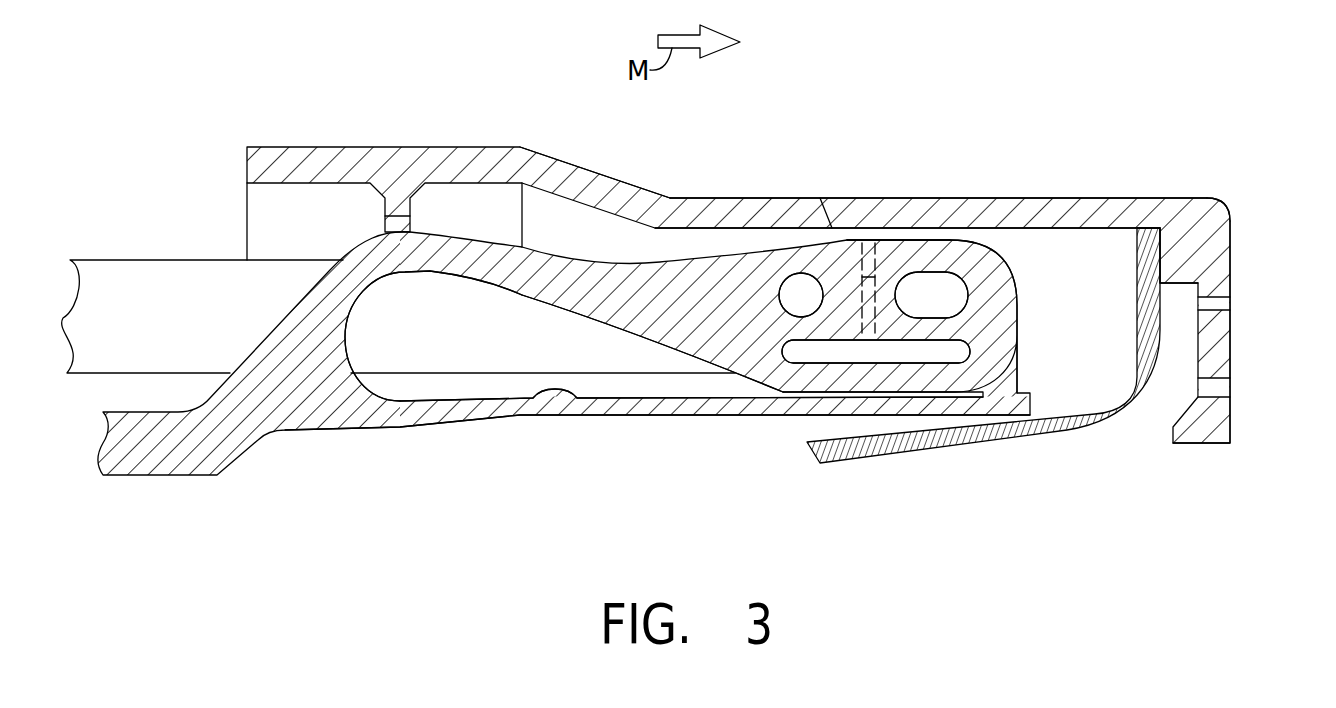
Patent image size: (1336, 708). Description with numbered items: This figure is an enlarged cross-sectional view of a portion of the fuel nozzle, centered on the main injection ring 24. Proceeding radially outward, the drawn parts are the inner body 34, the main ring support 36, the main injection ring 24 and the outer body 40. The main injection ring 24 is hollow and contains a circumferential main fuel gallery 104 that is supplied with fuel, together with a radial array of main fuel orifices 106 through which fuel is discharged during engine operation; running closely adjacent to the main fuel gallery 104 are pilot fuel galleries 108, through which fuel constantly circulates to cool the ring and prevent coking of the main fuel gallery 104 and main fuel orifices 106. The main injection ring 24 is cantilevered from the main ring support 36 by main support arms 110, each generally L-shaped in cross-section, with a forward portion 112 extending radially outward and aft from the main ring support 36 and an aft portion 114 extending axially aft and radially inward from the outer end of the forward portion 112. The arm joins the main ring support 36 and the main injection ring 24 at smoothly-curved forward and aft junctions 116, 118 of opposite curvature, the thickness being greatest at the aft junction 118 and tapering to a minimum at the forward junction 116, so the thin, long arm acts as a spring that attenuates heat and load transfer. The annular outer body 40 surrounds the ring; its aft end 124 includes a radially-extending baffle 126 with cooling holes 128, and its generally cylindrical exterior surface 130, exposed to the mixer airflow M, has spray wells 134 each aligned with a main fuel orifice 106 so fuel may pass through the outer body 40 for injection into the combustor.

The main injection ring 24 is at (985, 280).
The inner body 34 is at (967, 438).
The main ring support 36 is at (377, 412).
The outer body 40 is at (987, 205).
The main fuel gallery 104 is at (937, 345).
The main fuel orifices 106 is at (906, 243).
The pilot fuel galleries 108 is at (812, 308).
The main support arms 110 is at (547, 234).
The forward portion 112 is at (280, 353).
The aft portion 114 is at (612, 285).
The forward junction 116 is at (383, 267).
The aft junction 118 is at (652, 314).
The aft end 124 is at (1235, 172).
The baffle 126 is at (1195, 232).
The cooling holes 128 is at (1231, 302).
The exterior surface 130 is at (682, 183).
The spray wells 134 is at (833, 197).